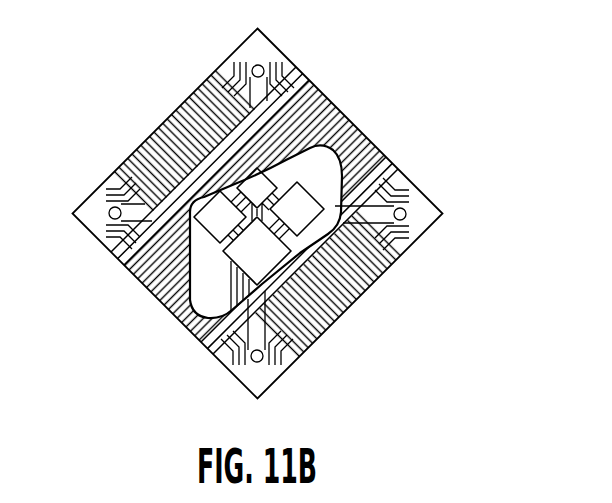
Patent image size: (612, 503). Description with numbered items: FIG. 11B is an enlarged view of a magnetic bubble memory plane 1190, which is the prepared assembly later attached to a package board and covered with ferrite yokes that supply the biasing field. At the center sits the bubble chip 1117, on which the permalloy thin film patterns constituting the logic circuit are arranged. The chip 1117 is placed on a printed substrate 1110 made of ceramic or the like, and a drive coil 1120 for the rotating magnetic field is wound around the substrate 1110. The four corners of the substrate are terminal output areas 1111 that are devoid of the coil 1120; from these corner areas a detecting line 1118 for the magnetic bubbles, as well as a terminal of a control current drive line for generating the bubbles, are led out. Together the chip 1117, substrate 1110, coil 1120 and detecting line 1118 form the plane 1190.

The plane 1190 is at (279, 222).
The drive coil 1120 is at (387, 172).
The printed substrate 1110 is at (125, 260).
The corner mounting pad 1111 is at (284, 54).
The detecting line 1118 is at (118, 190).
The bubble chip 1117 is at (238, 257).